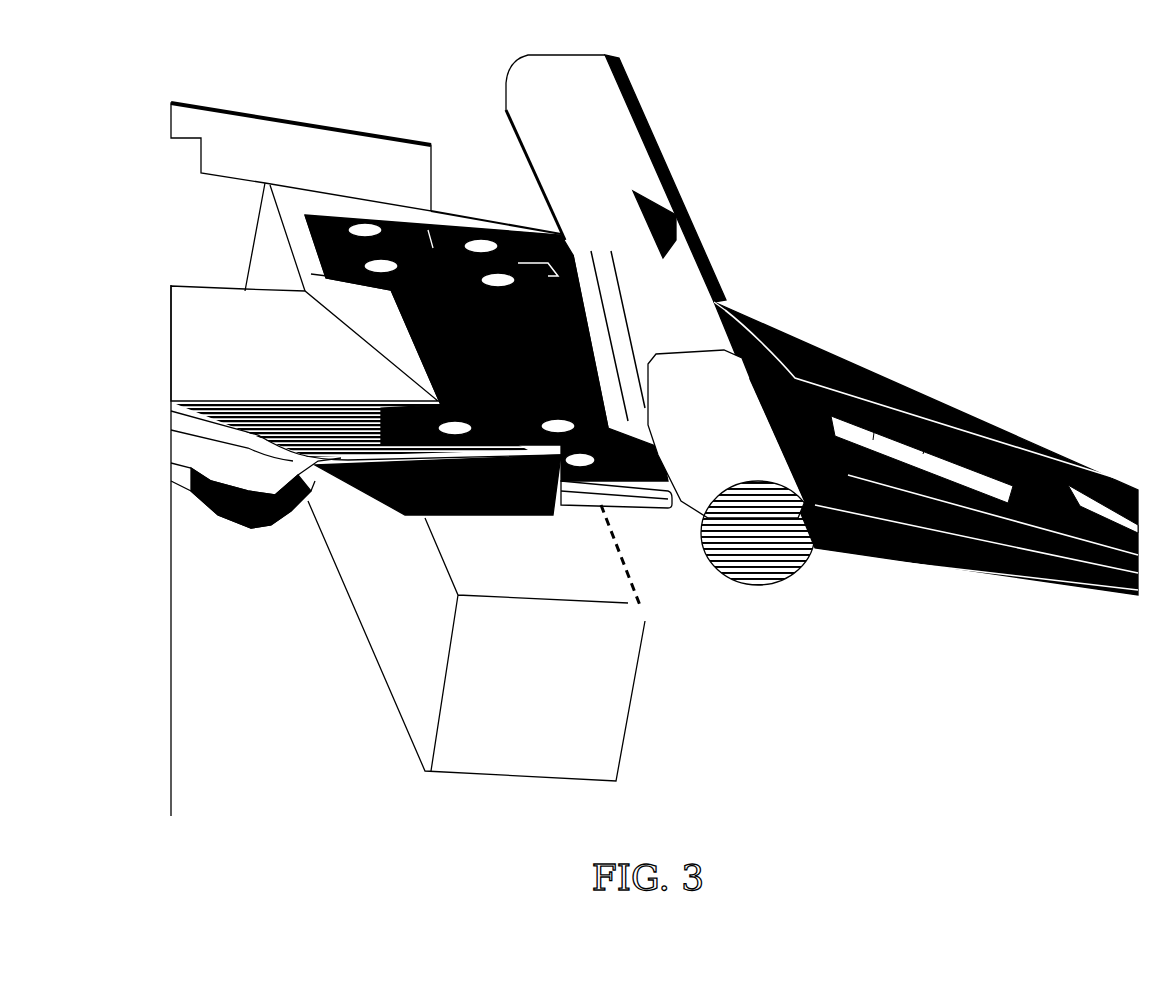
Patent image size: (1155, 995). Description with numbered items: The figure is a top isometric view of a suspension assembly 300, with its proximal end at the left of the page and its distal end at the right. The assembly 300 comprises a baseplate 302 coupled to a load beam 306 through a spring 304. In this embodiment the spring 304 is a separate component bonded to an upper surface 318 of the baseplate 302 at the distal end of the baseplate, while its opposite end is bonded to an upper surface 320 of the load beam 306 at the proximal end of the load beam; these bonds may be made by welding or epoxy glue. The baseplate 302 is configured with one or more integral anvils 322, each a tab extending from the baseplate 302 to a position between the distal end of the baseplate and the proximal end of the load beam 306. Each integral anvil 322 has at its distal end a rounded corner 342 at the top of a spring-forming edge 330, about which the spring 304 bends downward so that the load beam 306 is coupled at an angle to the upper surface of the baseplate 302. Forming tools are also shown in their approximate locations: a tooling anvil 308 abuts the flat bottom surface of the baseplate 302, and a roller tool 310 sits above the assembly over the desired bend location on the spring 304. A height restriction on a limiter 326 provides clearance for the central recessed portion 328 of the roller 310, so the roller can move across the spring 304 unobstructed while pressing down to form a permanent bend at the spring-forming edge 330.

The suspension assembly 300 is at (673, 25).
The baseplate 302 is at (260, 205).
The spring 304 is at (432, 243).
The load beam 306 is at (926, 428).
The tooling anvil 308 is at (483, 737).
The roller tool 310 is at (650, 147).
The upper surface of baseplate 318 is at (188, 397).
The upper surface of load beam 320 is at (963, 400).
The integral anvil 322 is at (513, 222).
The limiter 326 is at (607, 317).
The central recessed portion 328 is at (675, 318).
The spring-forming edge 330 is at (650, 513).
The rounded corner 342 is at (672, 482).